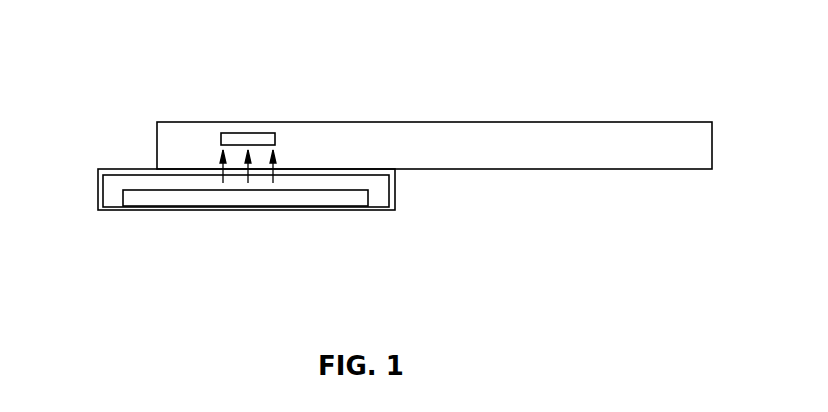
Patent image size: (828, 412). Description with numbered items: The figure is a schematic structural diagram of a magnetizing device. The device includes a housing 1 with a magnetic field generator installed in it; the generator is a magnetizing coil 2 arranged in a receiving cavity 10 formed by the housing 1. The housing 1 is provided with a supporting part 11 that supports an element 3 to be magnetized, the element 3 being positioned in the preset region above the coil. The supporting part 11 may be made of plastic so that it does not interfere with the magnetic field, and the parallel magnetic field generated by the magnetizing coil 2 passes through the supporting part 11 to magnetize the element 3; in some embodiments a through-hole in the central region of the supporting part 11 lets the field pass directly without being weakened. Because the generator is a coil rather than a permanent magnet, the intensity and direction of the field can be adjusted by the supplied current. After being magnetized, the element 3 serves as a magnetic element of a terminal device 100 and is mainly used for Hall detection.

The terminal device 100 is at (335, 143).
The housing 1 is at (212, 206).
The receiving cavity 10 is at (110, 200).
The supporting part 11 is at (117, 172).
The magnetizing coil 2 is at (230, 198).
The element to be magnetized 3 is at (247, 139).